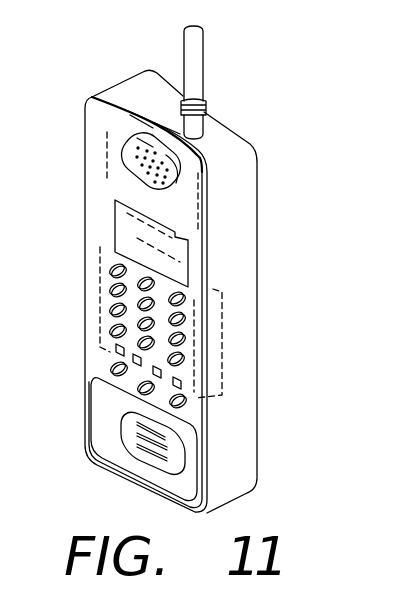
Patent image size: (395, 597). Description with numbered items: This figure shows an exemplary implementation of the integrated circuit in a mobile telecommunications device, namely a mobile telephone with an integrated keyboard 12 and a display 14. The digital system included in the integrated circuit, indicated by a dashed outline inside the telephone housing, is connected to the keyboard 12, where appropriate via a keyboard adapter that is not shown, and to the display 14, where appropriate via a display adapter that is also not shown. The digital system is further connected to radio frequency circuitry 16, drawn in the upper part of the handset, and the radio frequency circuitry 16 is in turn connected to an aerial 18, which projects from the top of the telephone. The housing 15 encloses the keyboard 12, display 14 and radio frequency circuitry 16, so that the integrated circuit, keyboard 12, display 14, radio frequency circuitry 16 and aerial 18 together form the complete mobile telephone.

The aerial 18 is at (197, 67).
The radio frequency circuitry 16 is at (118, 189).
The display 14 is at (116, 223).
The keyboard 12 is at (118, 306).
The housing 15 is at (243, 418).